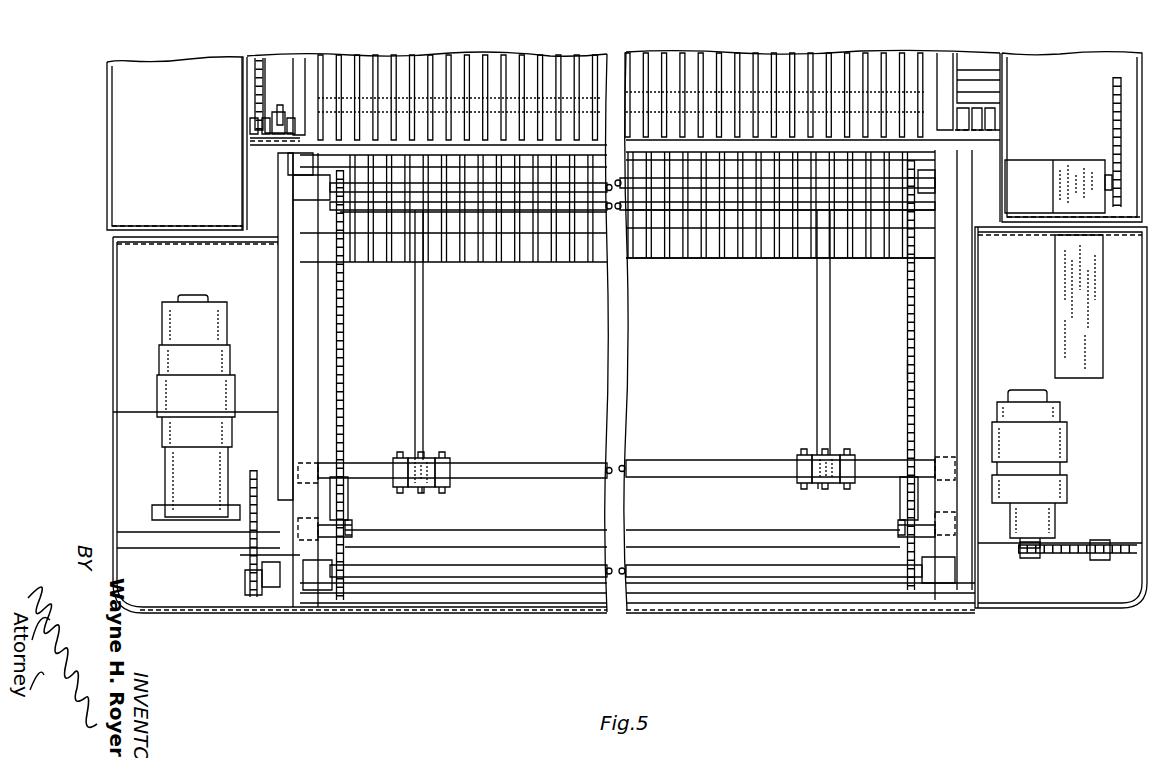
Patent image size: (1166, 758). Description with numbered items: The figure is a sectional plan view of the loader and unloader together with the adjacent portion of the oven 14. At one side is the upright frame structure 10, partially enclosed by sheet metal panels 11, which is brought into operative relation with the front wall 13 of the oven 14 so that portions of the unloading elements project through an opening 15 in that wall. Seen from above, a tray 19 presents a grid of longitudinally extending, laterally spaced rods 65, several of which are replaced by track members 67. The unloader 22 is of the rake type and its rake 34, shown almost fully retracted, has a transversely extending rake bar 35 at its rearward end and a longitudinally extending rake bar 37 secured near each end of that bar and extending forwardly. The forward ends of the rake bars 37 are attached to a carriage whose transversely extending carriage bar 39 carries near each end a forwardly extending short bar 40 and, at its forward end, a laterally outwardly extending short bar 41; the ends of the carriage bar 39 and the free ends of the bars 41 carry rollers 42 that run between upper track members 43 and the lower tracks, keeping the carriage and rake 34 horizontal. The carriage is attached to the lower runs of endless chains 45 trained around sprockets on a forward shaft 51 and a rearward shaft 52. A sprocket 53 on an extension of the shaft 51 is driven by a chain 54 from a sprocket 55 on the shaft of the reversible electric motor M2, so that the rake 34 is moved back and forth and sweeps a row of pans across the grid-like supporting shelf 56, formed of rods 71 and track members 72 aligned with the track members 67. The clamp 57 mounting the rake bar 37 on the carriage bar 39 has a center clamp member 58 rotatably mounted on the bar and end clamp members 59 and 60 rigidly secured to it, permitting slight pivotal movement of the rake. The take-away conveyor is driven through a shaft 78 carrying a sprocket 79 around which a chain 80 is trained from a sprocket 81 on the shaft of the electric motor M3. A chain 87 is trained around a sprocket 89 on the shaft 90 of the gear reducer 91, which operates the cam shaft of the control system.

The frame structure 10 is at (520, 605).
The sheet metal panels 11 is at (222, 615).
The front wall 13 is at (205, 227).
The oven 14 is at (108, 128).
The opening 15 is at (262, 205).
The tray 19 is at (745, 93).
The unloader 22 is at (905, 368).
The rake 34 is at (695, 258).
The transversely extending rake bar 35 is at (565, 207).
The longitudinally extending rake bar 37 is at (423, 355).
The carriage bar 39 is at (650, 462).
The short bar 40 is at (350, 492).
The laterally extending short bar 41 is at (352, 530).
The roller 42 is at (310, 463).
The upper track member 43 is at (318, 353).
The endless chain 45 is at (346, 376).
The shaft 51 is at (568, 578).
The shaft 52 is at (530, 187).
The sprocket 53 is at (277, 590).
The chain 54 is at (250, 562).
The sprocket 55 is at (252, 472).
The grid-like supporting shelf 56 is at (748, 253).
The clamp 57 is at (432, 495).
The center clamp member 58 is at (420, 460).
The end clamp member 59 is at (448, 462).
The end clamp member 60 is at (330, 460).
The rods 65 is at (665, 60).
The track members 67 is at (427, 57).
The rods 71 is at (500, 250).
The track members 72 is at (390, 262).
The shaft 78 is at (1100, 560).
The sprocket 79 is at (1103, 543).
The chain 80 is at (1058, 555).
The sprocket 81 is at (1025, 556).
The chain 87 is at (1113, 100).
The sprocket 89 is at (1110, 175).
The shaft 90 is at (1105, 195).
The gear reducer 91 is at (1068, 168).
The reversible electric motor M2 is at (216, 300).
The electric motor M3 is at (1067, 440).